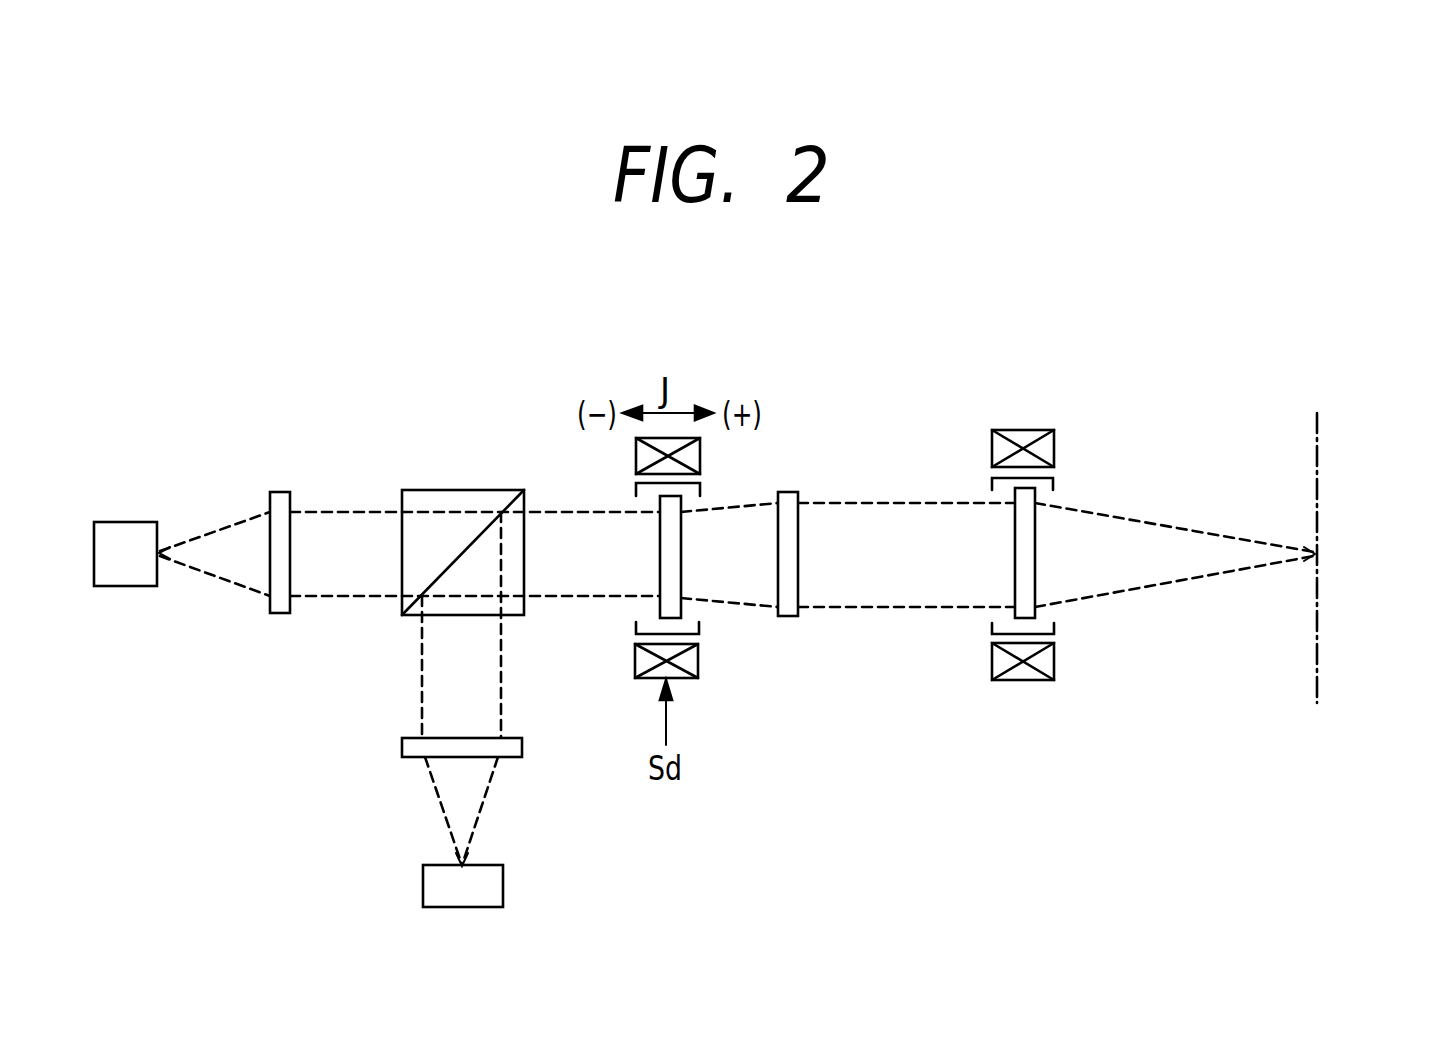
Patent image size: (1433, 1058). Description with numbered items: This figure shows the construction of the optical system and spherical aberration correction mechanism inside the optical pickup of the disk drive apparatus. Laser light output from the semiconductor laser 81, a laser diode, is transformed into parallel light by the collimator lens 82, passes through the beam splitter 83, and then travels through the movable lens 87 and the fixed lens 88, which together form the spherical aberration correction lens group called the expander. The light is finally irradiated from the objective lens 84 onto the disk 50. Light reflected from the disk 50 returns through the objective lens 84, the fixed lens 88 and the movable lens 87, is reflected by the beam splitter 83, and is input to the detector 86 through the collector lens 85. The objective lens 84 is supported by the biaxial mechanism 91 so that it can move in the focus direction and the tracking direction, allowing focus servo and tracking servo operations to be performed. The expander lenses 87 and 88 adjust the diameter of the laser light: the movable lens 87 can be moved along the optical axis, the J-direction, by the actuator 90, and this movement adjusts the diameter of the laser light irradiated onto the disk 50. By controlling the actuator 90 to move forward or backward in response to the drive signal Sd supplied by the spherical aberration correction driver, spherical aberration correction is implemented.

The semiconductor laser 81 is at (125, 522).
The collimator lens 82 is at (283, 492).
The beam splitter 83 is at (448, 490).
The objective lens 84 is at (1035, 548).
The collector lens 85 is at (402, 747).
The detector 86 is at (423, 886).
The movable lens 87 is at (660, 563).
The fixed lens 88 is at (787, 616).
The actuator 90 is at (698, 660).
The biaxial mechanism 91 is at (1023, 430).
The disk 50 is at (1318, 440).